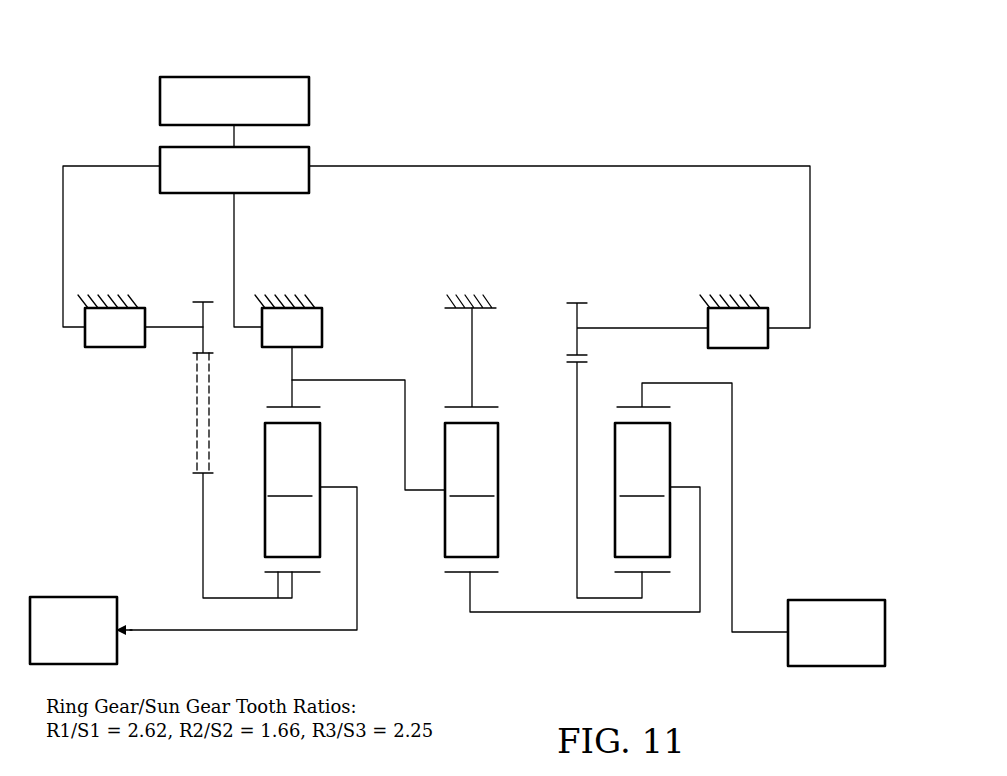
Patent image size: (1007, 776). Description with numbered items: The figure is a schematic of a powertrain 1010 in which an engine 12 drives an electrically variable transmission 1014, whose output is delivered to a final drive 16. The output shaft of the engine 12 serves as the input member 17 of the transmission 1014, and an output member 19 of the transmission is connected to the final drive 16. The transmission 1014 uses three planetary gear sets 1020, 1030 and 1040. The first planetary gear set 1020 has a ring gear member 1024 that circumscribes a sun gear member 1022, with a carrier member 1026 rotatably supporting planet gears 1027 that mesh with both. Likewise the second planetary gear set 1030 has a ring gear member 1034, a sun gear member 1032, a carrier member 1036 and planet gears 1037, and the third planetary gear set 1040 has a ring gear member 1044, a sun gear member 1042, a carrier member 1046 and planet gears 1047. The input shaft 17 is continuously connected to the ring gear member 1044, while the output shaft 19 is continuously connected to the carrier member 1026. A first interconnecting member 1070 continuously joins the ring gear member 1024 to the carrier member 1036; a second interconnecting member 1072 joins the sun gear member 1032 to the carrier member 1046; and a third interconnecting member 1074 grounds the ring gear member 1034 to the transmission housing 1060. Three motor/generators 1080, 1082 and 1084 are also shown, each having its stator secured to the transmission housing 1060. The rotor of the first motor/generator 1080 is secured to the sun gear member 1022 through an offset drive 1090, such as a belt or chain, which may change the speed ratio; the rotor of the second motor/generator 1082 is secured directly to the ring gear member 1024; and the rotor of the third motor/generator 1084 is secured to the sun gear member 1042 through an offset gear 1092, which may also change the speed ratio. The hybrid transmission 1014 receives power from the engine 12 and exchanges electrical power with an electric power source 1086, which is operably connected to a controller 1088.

The powertrain 1010 is at (684, 80).
The electrically variable transmission 1014 is at (726, 122).
The electric power source 1086 is at (313, 103).
The controller 1088 is at (313, 158).
The transmission housing 1060 is at (118, 294).
The first motor/generator 1080 is at (92, 352).
The second motor/generator 1082 is at (342, 307).
The third motor/generator 1084 is at (762, 358).
The offset drive 1090 is at (194, 410).
The offset gear 1092 is at (556, 355).
The first interconnecting member 1070 is at (368, 379).
The second interconnecting member 1072 is at (568, 614).
The third interconnecting member 1074 is at (470, 345).
The ring gear member 1024 is at (284, 404).
The sun gear member 1022 is at (278, 576).
The planetary gear set 1020 is at (303, 578).
The carrier member 1026 is at (334, 480).
The planet gears 1027 is at (291, 485).
The ring gear member 1034 is at (485, 405).
The sun gear member 1032 is at (455, 576).
The planetary gear set 1030 is at (481, 578).
The carrier member 1036 is at (441, 497).
The planet gears 1037 is at (473, 485).
The ring gear member 1044 is at (631, 405).
The sun gear member 1042 is at (628, 576).
The planetary gear set 1040 is at (656, 578).
The carrier member 1046 is at (674, 481).
The planet gears 1047 is at (643, 485).
The engine 12 is at (822, 588).
The final drive 16 is at (97, 577).
The input member 17 is at (765, 634).
The output member 19 is at (140, 633).